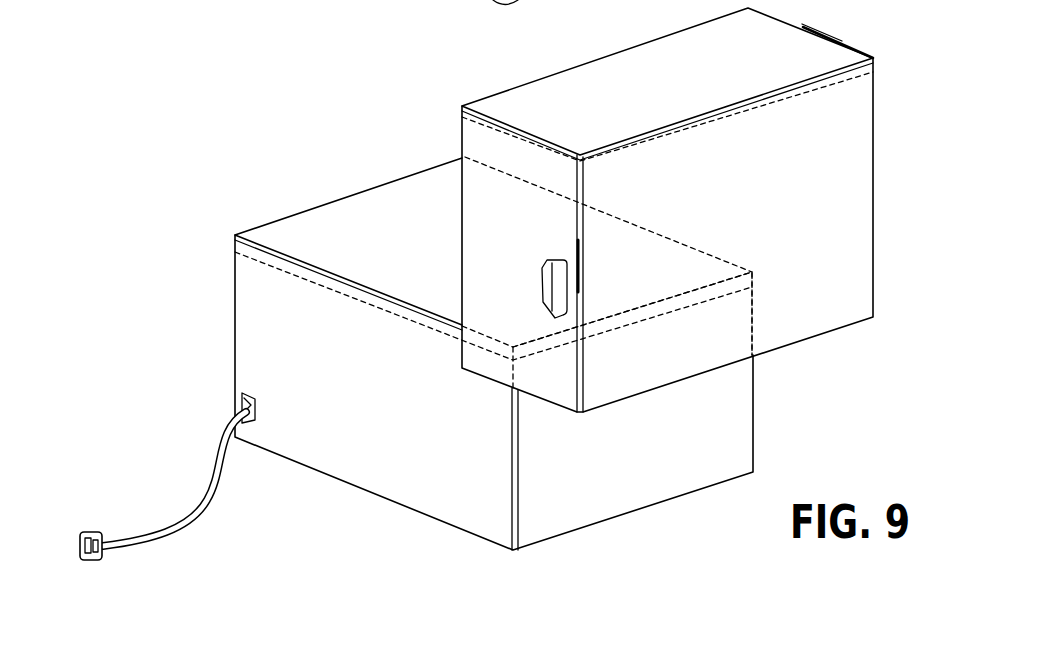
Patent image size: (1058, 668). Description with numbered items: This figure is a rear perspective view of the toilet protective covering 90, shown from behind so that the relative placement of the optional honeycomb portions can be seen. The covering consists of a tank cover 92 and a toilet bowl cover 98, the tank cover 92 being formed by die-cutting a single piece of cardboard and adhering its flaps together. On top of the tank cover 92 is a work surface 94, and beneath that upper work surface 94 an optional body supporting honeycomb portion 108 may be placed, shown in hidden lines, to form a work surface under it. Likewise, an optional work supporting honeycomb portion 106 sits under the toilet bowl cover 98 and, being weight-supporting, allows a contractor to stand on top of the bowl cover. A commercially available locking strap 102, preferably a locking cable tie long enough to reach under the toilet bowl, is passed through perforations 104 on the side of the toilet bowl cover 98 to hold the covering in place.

The toilet protective covering 90 is at (359, 118).
The tank cover 92 is at (862, 160).
The work surface 94 is at (658, 95).
The toilet bowl cover 98 is at (312, 216).
The locking strap 102 is at (175, 520).
The perforations 104 is at (250, 395).
The work supporting honeycomb portion 106 is at (718, 292).
The body supporting honeycomb portion 108 is at (850, 70).